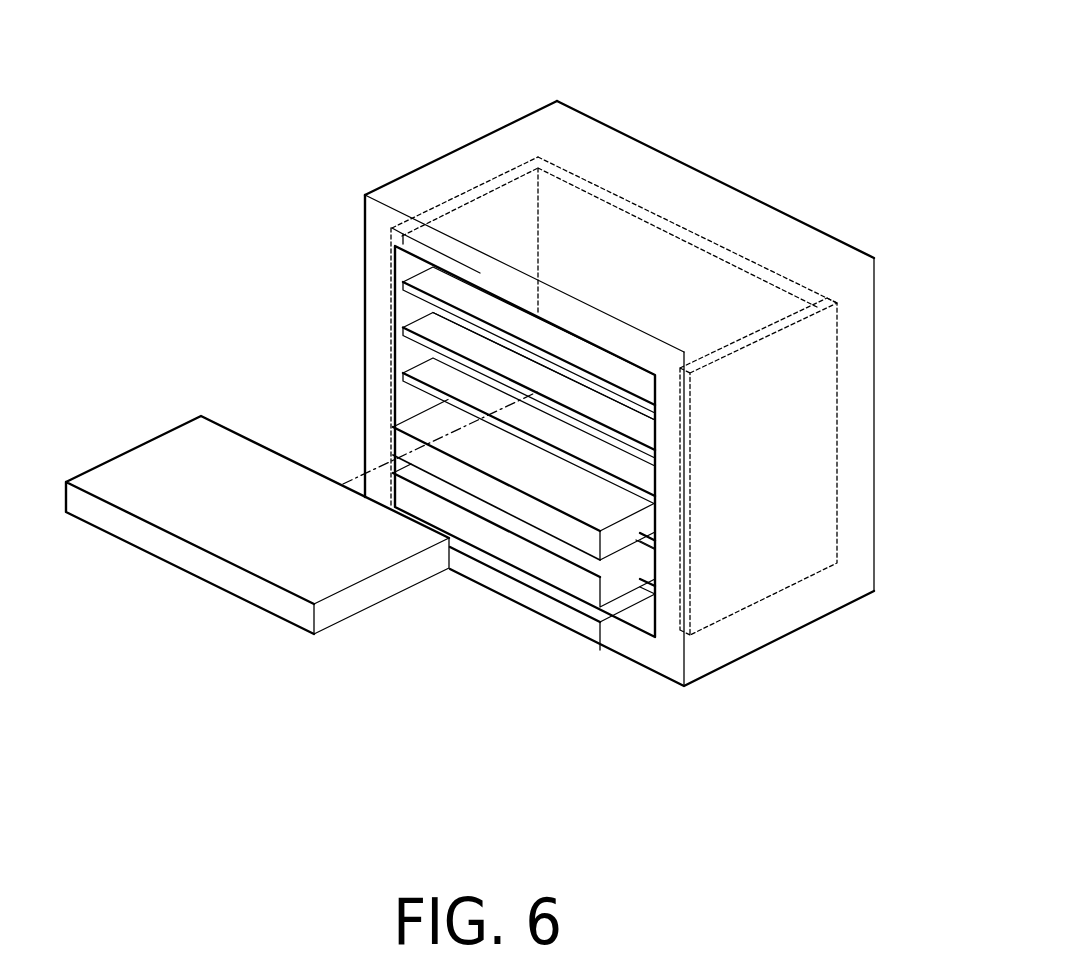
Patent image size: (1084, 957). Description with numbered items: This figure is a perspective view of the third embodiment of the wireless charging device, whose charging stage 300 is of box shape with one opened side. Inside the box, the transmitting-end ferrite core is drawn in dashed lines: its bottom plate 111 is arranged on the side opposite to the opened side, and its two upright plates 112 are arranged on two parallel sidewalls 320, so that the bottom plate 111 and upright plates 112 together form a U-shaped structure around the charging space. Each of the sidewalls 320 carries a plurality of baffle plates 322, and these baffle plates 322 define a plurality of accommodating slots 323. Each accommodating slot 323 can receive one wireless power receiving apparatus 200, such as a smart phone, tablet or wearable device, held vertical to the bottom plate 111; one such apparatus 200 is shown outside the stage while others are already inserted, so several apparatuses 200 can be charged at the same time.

The charging stage 300 is at (385, 100).
The bottom plate 111 is at (706, 244).
The upright plates 112 is at (460, 205).
The sidewalls 320 is at (394, 348).
The baffle plates 322 is at (475, 348).
The accommodating slots 323 is at (452, 390).
The wireless power receiving apparatus 200 is at (208, 614).